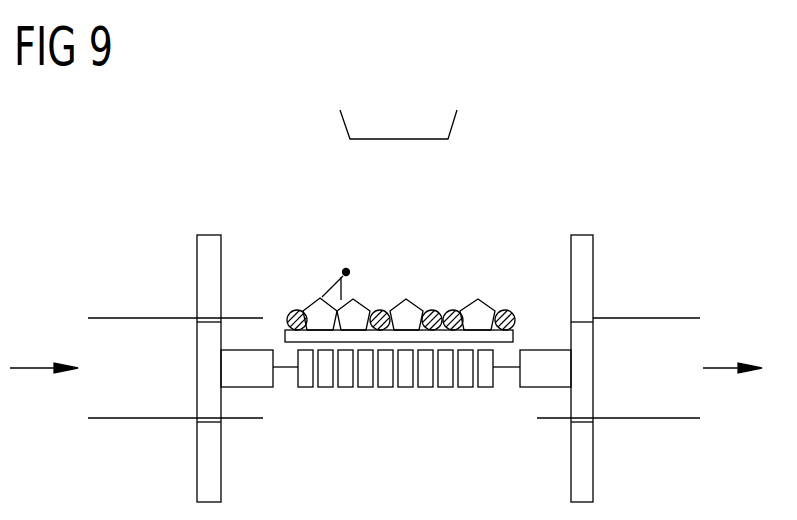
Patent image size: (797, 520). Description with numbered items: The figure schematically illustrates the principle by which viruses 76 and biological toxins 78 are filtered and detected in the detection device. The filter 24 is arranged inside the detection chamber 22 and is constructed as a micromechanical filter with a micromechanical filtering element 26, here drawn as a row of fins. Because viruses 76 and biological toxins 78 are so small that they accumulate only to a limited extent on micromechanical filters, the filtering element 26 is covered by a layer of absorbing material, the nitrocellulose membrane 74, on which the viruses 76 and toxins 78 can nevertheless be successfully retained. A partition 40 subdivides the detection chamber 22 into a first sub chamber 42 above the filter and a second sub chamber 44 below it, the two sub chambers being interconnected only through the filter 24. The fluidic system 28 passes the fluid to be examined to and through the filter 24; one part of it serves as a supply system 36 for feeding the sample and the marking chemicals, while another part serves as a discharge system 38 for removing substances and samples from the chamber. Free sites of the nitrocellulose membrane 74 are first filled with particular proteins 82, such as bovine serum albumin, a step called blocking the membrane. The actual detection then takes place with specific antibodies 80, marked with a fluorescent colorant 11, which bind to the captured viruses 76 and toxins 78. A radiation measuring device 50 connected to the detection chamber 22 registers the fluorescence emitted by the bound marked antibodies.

The fluorescent colorant 11 is at (348, 268).
The detection chamber 22 is at (595, 475).
The filter 24 is at (357, 415).
The micromechanical filtering element 26 is at (404, 388).
The fluidic system 28 is at (124, 278).
The supply system 36 is at (40, 367).
The discharge system 38 is at (722, 367).
The partition 40 is at (537, 390).
The first sub chamber 42 is at (490, 219).
The second sub chamber 44 is at (454, 506).
The radiation measuring device 50 is at (414, 98).
The nitrocellulose membrane 74 is at (515, 333).
The viruses 76 is at (380, 293).
The biological toxins 78 is at (415, 302).
The specific antibodies 80 is at (328, 258).
The proteins 82 is at (295, 310).